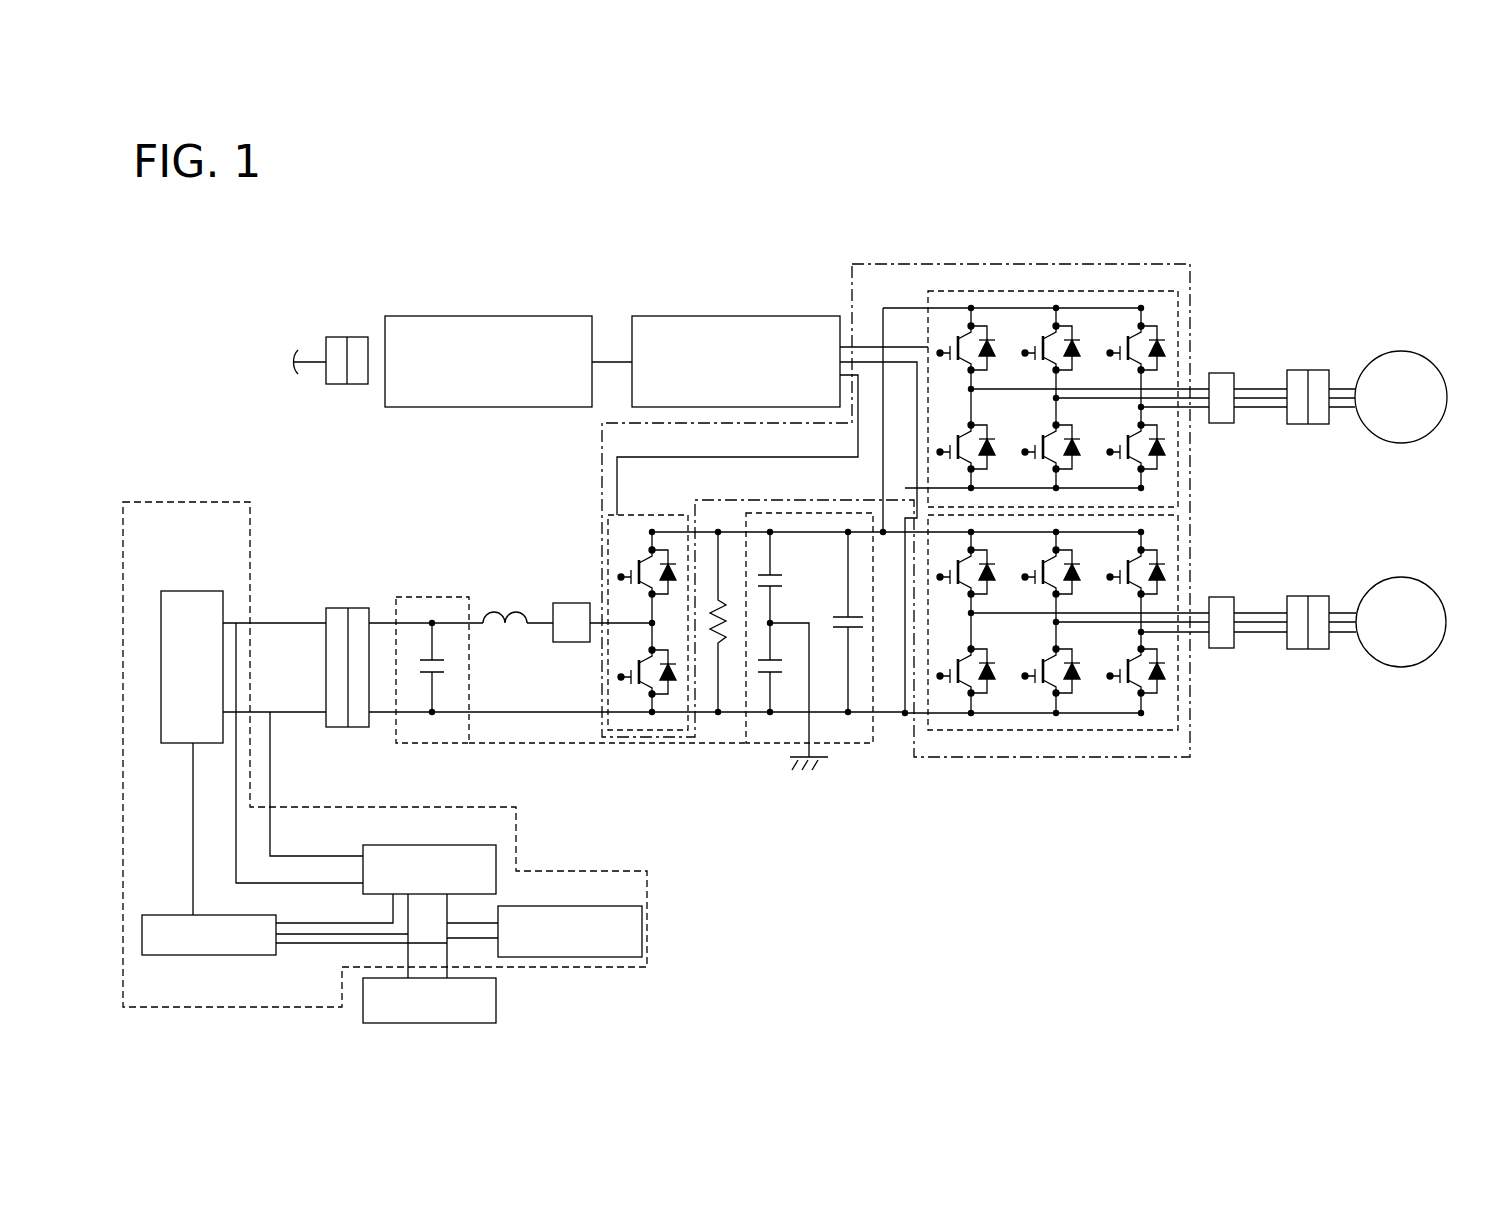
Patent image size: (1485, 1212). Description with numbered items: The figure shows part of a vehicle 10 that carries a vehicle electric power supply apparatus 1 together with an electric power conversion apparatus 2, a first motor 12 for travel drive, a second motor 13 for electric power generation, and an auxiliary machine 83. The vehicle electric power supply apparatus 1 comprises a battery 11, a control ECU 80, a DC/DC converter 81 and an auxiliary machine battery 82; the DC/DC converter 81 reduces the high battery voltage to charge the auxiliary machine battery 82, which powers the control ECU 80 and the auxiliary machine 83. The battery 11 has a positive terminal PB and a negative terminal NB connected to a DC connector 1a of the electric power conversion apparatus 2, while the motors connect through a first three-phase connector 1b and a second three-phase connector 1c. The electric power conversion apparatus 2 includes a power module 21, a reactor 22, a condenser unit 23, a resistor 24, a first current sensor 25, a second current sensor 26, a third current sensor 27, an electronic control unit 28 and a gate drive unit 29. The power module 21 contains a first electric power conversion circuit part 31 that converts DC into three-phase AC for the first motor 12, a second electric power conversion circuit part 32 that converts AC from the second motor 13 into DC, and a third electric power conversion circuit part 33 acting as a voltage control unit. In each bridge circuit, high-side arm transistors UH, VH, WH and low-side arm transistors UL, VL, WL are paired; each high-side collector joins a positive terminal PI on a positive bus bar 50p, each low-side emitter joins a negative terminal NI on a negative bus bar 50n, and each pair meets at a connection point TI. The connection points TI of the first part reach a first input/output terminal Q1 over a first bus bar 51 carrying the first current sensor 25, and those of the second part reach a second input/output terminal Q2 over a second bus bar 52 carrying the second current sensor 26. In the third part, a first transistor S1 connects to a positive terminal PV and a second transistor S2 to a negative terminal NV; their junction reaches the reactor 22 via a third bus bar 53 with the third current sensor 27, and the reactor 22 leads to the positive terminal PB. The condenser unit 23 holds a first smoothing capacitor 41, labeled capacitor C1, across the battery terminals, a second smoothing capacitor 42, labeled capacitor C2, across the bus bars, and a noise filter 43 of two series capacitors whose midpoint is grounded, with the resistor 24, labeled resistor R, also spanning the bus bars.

The vehicle electric power supply apparatus 1 is at (152, 501).
The DC connector 1a is at (336, 608).
The first three-phase connector 1b is at (1316, 370).
The second three-phase connector 1c is at (1318, 650).
The electric power conversion apparatus 2 is at (1112, 172).
The vehicle 10 is at (1237, 178).
The battery 11 is at (180, 591).
The first motor 12 is at (1400, 351).
The second motor 13 is at (1400, 577).
The power module 21 is at (1180, 263).
The reactor 22 is at (510, 612).
The condenser unit 23 is at (432, 597).
The resistor 24 is at (736, 687).
The first current sensor 25 is at (1220, 373).
The second current sensor 26 is at (1222, 648).
The third current sensor 27 is at (570, 603).
The electronic control unit 28 is at (490, 316).
The gate drive unit 29 is at (732, 316).
The first electric power conversion circuit part 31 is at (1180, 297).
The second electric power conversion circuit part 32 is at (1180, 572).
The third electric power conversion circuit part 33 is at (608, 523).
The first smoothing capacitor 41 is at (426, 703).
The second smoothing capacitor 42 is at (839, 687).
The noise filter 43 is at (671, 679).
The positive bus bar 50p is at (883, 532).
The negative bus bar 50n is at (905, 713).
The first bus bar 51 is at (1264, 407).
The second bus bar 52 is at (1247, 632).
The third bus bar 53 is at (597, 624).
The control ECU 80 is at (213, 915).
The DC/DC converter 81 is at (437, 845).
The auxiliary machine battery 82 is at (578, 906).
The auxiliary machine 83 is at (496, 1005).
The positive terminal PB is at (326, 624).
The negative terminal NB is at (326, 713).
The positive terminal PV is at (652, 531).
The negative terminal NV is at (655, 716).
The first transistor S1 is at (633, 582).
The second transistor S2 is at (633, 682).
The positive terminal PI is at (1141, 306).
The negative terminal NI is at (971, 488).
The connection point TI is at (1145, 406).
The U-phase low-side arm transistor UL is at (950, 452).
The U-phase high-side arm transistor UH is at (960, 349).
The V-phase low-side arm transistor VL is at (1035, 452).
The V-phase high-side arm transistor VH is at (1045, 349).
The W-phase low-side arm transistor WL is at (1120, 452).
The W-phase high-side arm transistor WH is at (1130, 349).
The first input/output terminal Q1 is at (1278, 390).
The second input/output terminal Q2 is at (1278, 632).
The first capacitor C1 is at (420, 645).
The second capacitor C2 is at (835, 603).
The resistor R is at (728, 588).